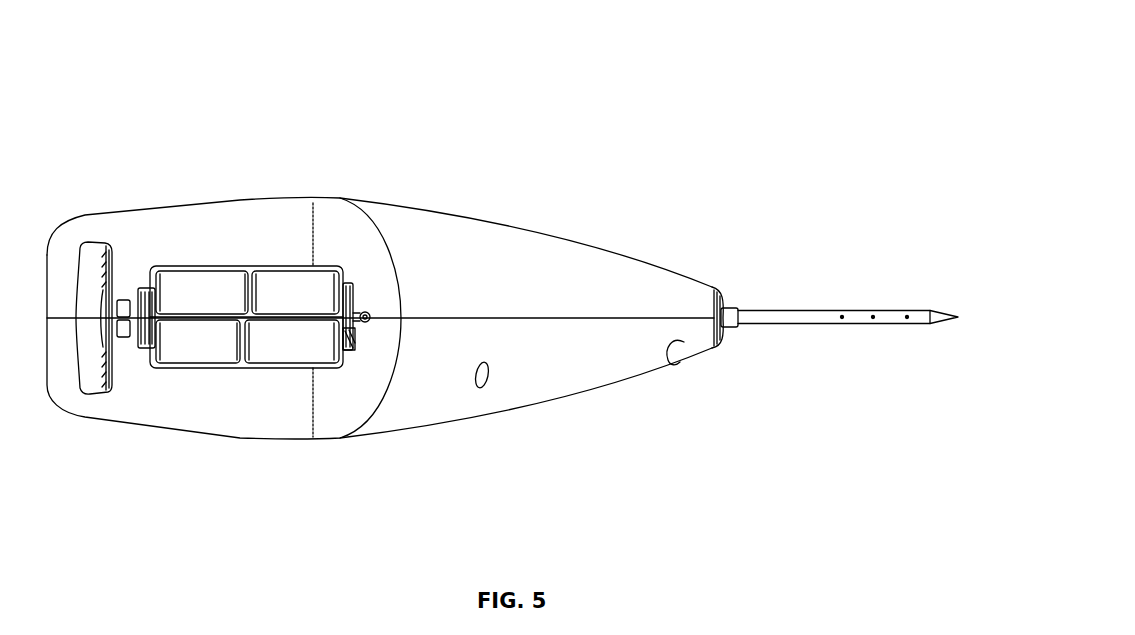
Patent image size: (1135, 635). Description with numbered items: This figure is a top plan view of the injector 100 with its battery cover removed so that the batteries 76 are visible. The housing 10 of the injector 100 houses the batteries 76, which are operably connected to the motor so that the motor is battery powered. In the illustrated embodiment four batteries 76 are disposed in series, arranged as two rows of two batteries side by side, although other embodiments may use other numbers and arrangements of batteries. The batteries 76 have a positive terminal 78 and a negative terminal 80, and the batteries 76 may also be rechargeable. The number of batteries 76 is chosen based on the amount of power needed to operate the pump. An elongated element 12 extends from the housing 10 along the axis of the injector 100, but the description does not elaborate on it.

The injector 100 is at (502, 238).
The housing 10 is at (383, 198).
The probe shaft 12 is at (785, 310).
The batteries 76 is at (238, 267).
The positive terminal 78 is at (358, 307).
The negative terminal 80 is at (357, 347).